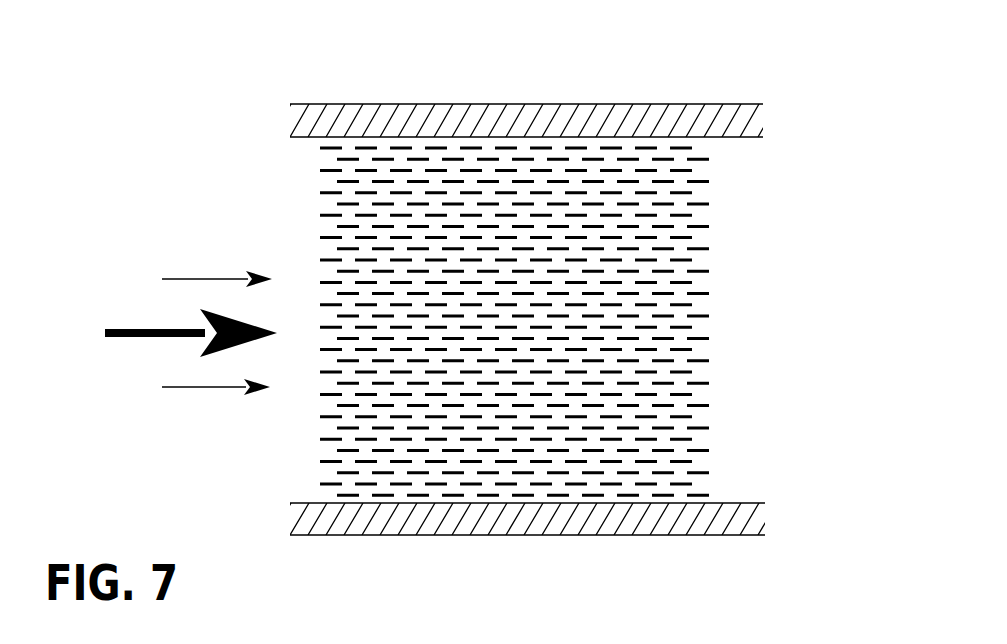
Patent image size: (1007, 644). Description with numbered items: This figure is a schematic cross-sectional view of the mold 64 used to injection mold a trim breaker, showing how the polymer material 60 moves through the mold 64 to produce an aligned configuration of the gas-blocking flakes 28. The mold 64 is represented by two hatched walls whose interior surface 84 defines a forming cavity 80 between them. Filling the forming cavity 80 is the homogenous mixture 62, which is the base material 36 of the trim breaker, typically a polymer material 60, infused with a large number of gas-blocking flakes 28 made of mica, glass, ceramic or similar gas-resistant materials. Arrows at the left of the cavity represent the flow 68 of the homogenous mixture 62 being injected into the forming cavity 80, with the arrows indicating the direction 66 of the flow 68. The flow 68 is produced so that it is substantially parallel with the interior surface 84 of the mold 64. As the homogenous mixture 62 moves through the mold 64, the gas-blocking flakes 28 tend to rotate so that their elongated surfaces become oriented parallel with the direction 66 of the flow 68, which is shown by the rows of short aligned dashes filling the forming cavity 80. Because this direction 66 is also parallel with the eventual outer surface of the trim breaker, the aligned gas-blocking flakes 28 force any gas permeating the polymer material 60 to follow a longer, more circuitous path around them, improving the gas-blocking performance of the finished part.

The gas-blocking flakes 28 is at (680, 323).
The base material 36 is at (650, 140).
The polymer material 60 is at (557, 148).
The homogenous mixture 62 is at (720, 189).
The mold 64 is at (468, 98).
The direction of flow 66 is at (192, 277).
The flow 68 is at (143, 330).
The forming cavity 80 is at (302, 410).
The interior surface 84 is at (660, 500).